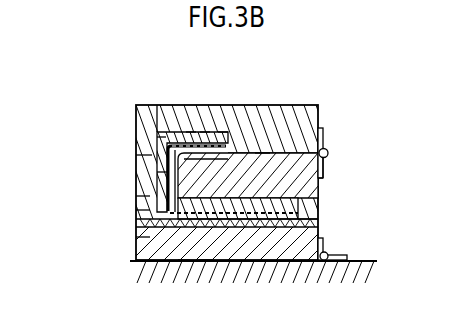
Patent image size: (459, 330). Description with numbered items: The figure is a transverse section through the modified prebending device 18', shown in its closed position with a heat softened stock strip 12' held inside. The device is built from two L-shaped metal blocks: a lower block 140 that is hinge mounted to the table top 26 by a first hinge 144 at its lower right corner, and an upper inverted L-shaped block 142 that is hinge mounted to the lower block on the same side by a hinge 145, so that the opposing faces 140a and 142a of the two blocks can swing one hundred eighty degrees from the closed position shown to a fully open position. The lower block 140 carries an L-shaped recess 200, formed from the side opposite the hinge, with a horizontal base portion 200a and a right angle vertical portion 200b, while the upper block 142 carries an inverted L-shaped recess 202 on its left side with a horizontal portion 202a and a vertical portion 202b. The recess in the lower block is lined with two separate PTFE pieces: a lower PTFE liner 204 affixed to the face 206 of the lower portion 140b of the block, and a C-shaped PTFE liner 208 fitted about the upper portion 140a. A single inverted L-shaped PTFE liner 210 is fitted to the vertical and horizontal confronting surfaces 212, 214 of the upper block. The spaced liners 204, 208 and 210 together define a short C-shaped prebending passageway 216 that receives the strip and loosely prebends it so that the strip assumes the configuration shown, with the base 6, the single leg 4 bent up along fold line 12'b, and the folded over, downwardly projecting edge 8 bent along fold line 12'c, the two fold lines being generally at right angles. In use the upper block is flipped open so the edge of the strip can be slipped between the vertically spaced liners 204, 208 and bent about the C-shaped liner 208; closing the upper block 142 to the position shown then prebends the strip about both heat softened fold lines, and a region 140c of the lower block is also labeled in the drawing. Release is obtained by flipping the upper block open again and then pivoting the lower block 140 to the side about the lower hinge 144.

The leg 4 is at (150, 196).
The base 6 is at (320, 222).
The edge 8 is at (192, 135).
The stock strip 12' is at (200, 235).
The fold line 12'b is at (126, 249).
The fold line 12'c is at (107, 151).
The prebending device 18' is at (360, 86).
The table top 26 is at (343, 266).
The lower block 140 is at (268, 255).
The upper portion of lower block 140a is at (327, 161).
The lower portion of lower block 140b is at (205, 255).
The housing recess 140c is at (320, 186).
The upper block 142 is at (240, 128).
The face of upper block 142a is at (319, 114).
The first hinge 144 is at (331, 250).
The hinge 145 is at (326, 144).
The L-shaped recess 200 is at (300, 205).
The horizontal base portion 200a is at (298, 250).
The vertical portion 200b is at (205, 177).
The inverted L-shaped recess 202 is at (175, 130).
The horizontal portion 202a is at (204, 130).
The vertical portion 202b is at (160, 172).
The lower PTFE liner 204 is at (247, 245).
The face 206 is at (180, 255).
The C-shaped PTFE liner 208 is at (262, 125).
The inverted L-shaped PTFE liner 210 is at (157, 137).
The vertical confronting surface 212 is at (136, 210).
The horizontal confronting surface 214 is at (155, 128).
The prebending passageway 216 is at (222, 135).